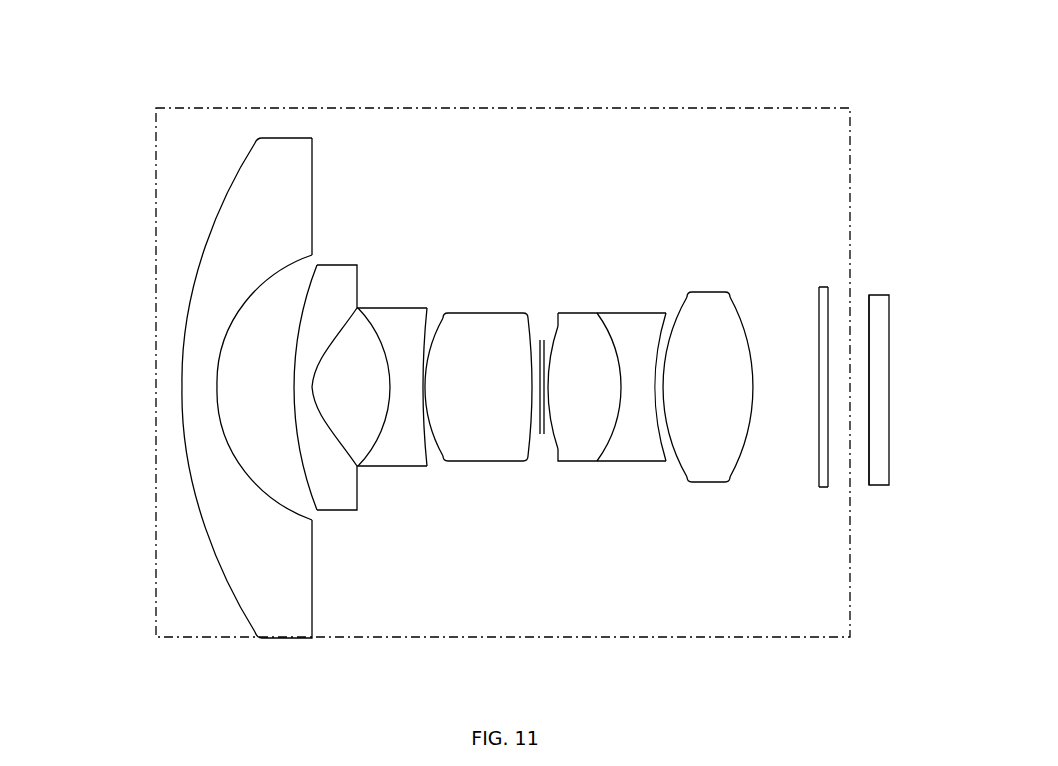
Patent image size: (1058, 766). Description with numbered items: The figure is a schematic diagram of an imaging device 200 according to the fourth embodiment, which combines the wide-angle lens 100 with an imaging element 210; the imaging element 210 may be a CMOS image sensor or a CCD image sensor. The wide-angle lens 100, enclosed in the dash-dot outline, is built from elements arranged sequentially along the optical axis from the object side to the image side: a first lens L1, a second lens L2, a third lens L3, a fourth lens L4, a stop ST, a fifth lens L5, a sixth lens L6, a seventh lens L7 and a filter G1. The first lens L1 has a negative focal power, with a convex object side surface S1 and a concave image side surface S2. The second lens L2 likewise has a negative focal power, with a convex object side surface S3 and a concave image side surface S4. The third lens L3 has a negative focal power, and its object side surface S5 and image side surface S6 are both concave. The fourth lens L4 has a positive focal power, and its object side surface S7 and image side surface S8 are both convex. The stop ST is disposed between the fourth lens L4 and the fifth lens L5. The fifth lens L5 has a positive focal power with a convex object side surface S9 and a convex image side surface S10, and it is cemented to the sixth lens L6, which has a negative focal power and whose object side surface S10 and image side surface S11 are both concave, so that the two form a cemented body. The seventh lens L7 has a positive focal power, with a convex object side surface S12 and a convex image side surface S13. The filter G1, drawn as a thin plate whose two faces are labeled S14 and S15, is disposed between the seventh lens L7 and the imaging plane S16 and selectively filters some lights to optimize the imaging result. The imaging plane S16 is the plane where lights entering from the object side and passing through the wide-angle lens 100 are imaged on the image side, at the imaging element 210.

The wide-angle lens 100 is at (229, 107).
The imaging device 200 is at (92, 171).
The imaging element 210 is at (876, 294).
The first lens L1 is at (280, 173).
The second lens L2 is at (337, 283).
The third lens L3 is at (408, 328).
The fourth lens L4 is at (492, 328).
The fifth lens L5 is at (577, 328).
The sixth lens L6 is at (637, 330).
The seventh lens L7 is at (708, 307).
The filter G1 is at (827, 289).
The stop ST is at (544, 387).
The object side surface of the first lens S1 is at (182, 387).
The image side surface of the first lens S2 is at (217, 387).
The object side surface of the second lens S3 is at (294, 387).
The image side surface of the second lens S4 is at (312, 387).
The object side surface of the third lens S5 is at (390, 387).
The image side surface of the third lens S6 is at (423, 387).
The object side surface of the fourth lens S7 is at (425, 387).
The image side surface of the fourth lens S8 is at (532, 387).
The object side surface of the fifth lens S9 is at (548, 387).
The image side surface of the fifth lens S10 is at (621, 387).
The image side surface of the sixth lens S11 is at (665, 313).
The object side surface of the seventh lens S12 is at (665, 387).
The image side surface of the seventh lens S13 is at (752, 387).
The object-side surface of optical filter S14 is at (818, 365).
The image-side surface of optical filter S15 is at (828, 387).
The imaging plane S16 is at (870, 447).